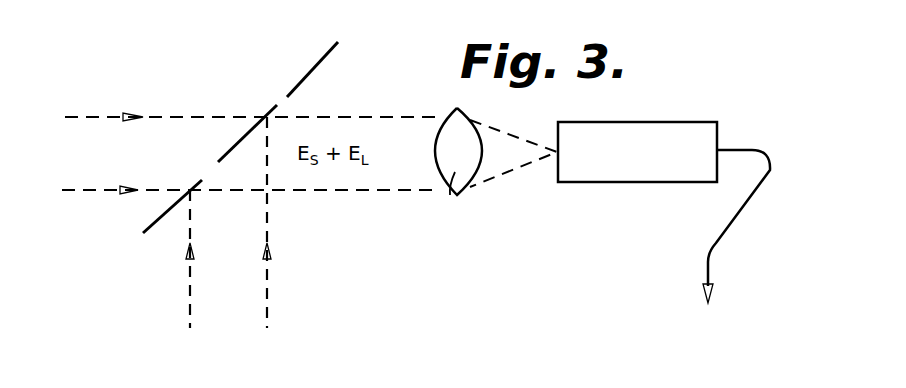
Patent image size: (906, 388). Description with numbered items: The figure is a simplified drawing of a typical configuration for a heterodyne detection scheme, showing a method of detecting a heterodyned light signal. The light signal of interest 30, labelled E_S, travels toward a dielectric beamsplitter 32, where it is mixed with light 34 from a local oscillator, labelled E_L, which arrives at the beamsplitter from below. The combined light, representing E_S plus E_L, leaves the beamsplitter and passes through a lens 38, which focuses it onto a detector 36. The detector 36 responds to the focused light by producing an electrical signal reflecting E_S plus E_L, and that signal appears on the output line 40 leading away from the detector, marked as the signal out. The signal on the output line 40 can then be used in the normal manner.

The light signal of interest 30 is at (116, 130).
The dielectric beamsplitter 32 is at (325, 62).
The light from a local oscillator 34 is at (228, 299).
The detector 36 is at (697, 130).
The lens 38 is at (455, 192).
The output line 40 is at (708, 256).